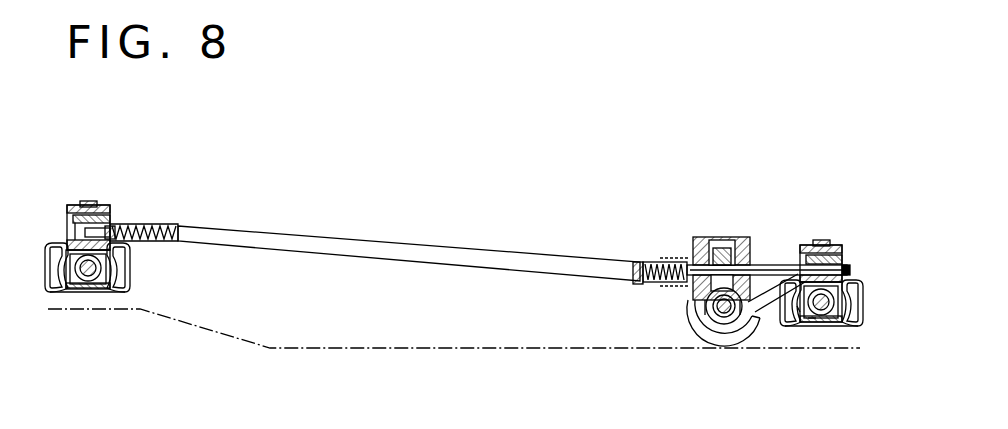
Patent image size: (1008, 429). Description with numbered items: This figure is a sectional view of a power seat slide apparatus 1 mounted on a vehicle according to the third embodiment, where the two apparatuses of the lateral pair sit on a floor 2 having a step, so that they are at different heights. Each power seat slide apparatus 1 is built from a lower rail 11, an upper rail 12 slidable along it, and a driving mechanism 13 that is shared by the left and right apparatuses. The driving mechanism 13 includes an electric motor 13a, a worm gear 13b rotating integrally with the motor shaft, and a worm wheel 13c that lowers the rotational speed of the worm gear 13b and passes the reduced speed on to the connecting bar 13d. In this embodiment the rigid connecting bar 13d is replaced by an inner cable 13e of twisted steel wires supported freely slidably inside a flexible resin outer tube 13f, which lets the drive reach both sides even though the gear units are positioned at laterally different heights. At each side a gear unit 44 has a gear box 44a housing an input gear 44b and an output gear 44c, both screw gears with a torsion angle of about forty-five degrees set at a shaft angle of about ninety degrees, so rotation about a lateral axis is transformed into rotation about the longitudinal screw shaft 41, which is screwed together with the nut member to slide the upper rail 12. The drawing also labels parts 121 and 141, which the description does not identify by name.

The power seat slide apparatus 1 is at (76, 200).
The floor 2 is at (472, 350).
The lower rail 11 is at (124, 289).
The upper rail 12 is at (120, 268).
The driving mechanism 13 is at (720, 236).
The electric motor 13a is at (688, 320).
The worm gear 13b is at (722, 318).
The worm wheel 13c is at (692, 262).
The connecting bar 13d is at (482, 246).
The inner cable 13e is at (655, 264).
The outer tube 13f is at (642, 262).
The screw shaft 41 is at (88, 282).
The gear unit 44 is at (93, 201).
The gear box 44a is at (110, 220).
The input gear 44b is at (114, 238).
The output gear 44c is at (102, 288).
The upper rail flange 121 is at (790, 322).
The lock shaft holder 141 is at (812, 322).